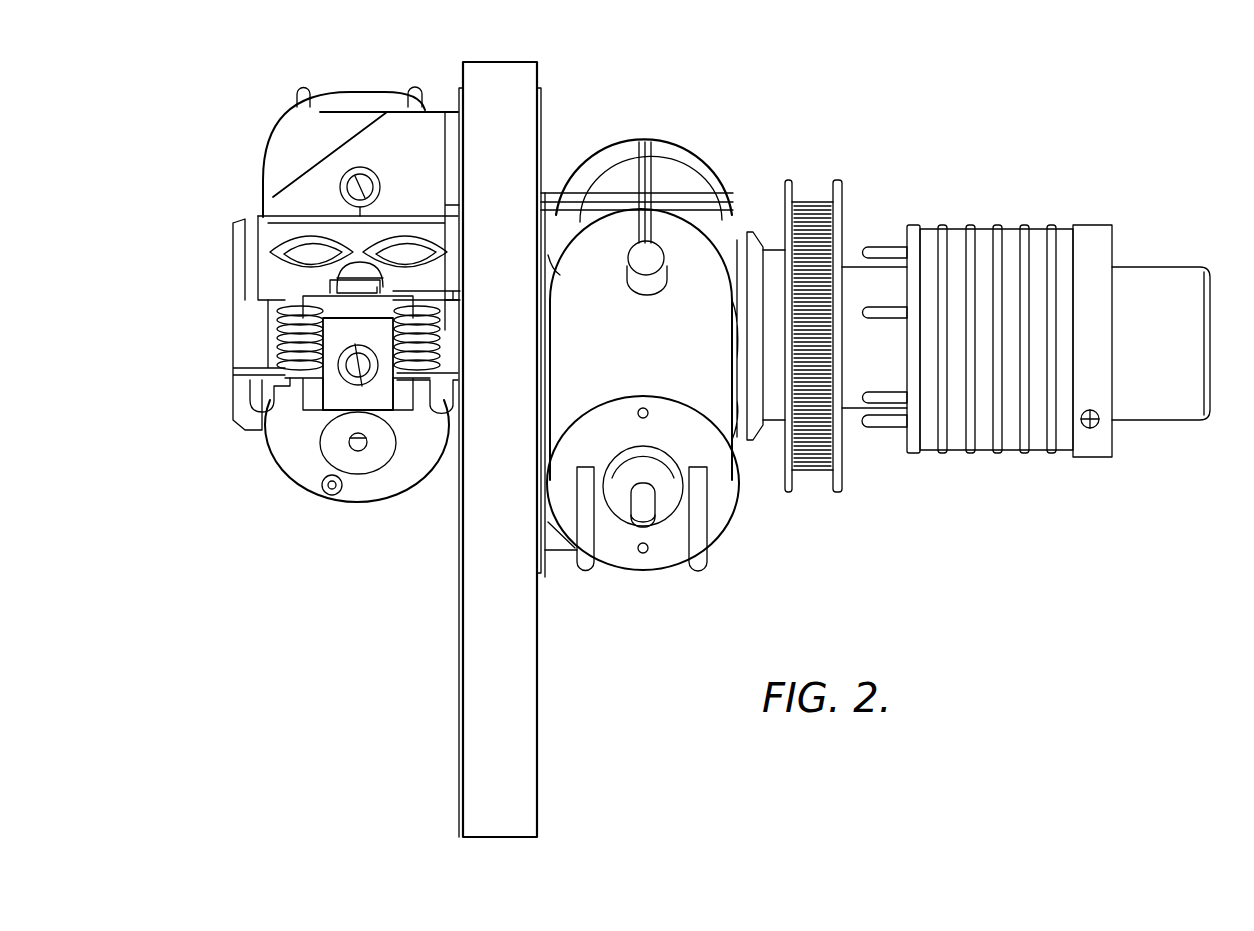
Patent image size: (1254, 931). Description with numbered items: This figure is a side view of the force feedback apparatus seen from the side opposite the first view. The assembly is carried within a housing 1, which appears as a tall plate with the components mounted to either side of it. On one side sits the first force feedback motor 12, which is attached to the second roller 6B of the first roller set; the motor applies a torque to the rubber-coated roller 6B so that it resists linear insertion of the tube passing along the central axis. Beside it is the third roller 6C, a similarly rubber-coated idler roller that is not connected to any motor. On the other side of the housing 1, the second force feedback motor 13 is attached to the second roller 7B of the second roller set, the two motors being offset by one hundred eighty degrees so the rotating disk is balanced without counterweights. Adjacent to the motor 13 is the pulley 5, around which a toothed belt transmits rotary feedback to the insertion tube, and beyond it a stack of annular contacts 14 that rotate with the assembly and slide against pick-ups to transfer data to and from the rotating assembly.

The housing 1 is at (495, 712).
The first force feedback motor 12 is at (317, 97).
The second roller 6B is at (277, 350).
The third roller 6C is at (357, 510).
The second force feedback motor 13 is at (642, 362).
The second roller 7B is at (677, 172).
The pulley 5 is at (833, 213).
The annular contacts 14 is at (1013, 435).